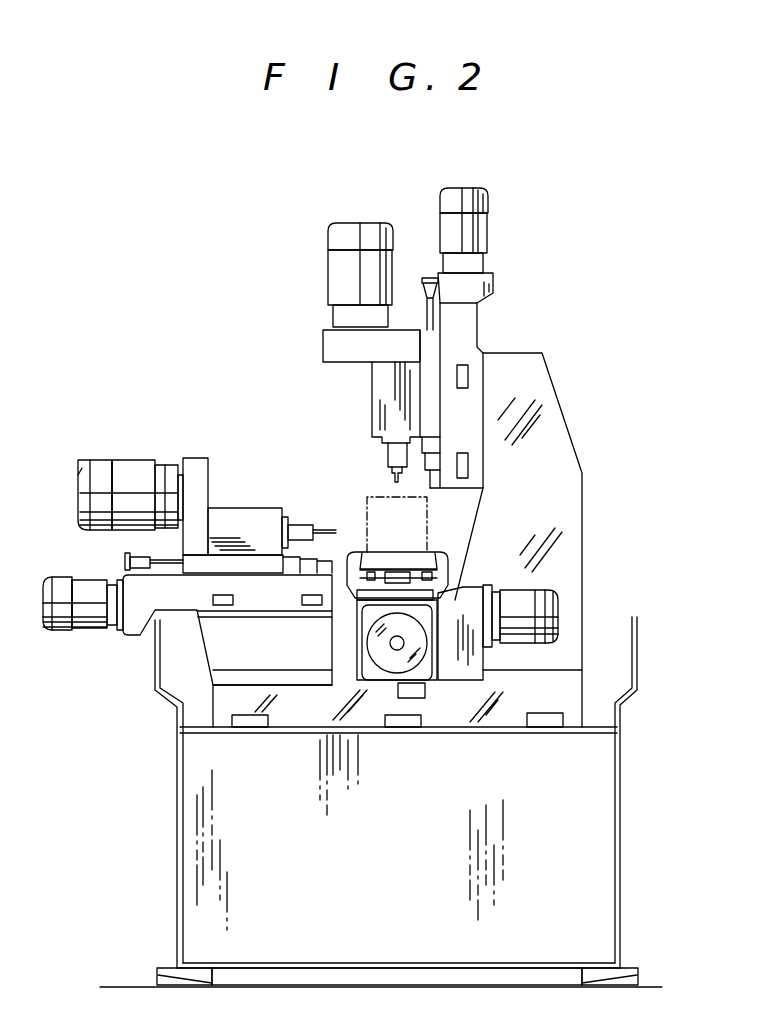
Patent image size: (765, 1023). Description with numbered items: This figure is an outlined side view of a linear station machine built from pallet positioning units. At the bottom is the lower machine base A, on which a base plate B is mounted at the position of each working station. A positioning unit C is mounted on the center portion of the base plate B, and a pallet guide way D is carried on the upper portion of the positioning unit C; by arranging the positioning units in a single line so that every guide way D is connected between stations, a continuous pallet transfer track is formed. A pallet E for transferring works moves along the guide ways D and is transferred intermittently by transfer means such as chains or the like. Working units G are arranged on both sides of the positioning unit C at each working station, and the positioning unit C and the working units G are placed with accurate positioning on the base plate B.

The lower machine base A is at (190, 838).
The base plate B is at (212, 733).
The positioning unit C is at (361, 546).
The pallet guide way D is at (433, 573).
The pallet E is at (418, 560).
The working unit G is at (325, 349).